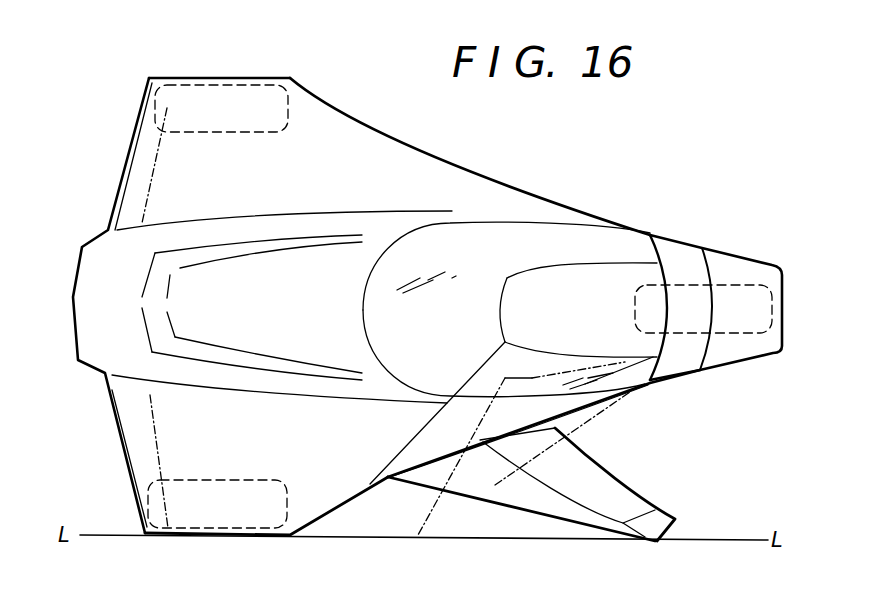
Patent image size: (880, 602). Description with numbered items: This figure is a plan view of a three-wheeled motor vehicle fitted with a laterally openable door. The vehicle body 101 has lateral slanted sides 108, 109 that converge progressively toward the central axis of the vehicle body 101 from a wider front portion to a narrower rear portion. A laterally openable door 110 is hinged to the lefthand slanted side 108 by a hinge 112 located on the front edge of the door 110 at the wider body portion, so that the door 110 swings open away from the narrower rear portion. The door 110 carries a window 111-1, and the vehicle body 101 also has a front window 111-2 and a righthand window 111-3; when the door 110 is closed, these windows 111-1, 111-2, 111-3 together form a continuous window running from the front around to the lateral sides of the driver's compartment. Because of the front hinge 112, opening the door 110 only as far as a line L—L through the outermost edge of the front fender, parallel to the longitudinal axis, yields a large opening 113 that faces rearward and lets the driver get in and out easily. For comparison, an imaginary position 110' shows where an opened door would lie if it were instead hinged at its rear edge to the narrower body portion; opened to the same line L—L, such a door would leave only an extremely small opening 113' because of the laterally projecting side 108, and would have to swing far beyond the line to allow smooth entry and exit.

The vehicle body 101 is at (557, 172).
The lefthand slanted side 108 is at (305, 530).
The righthand slanted side 109 is at (347, 113).
The laterally openable door 110 is at (531, 506).
The imaginary door position 110' is at (556, 488).
The door window 111-1 is at (603, 500).
The front window 111-2 is at (473, 277).
The righthand window 111-3 is at (618, 247).
The hinge 112 is at (347, 502).
The opening 113 is at (570, 446).
The opening 113' is at (432, 463).